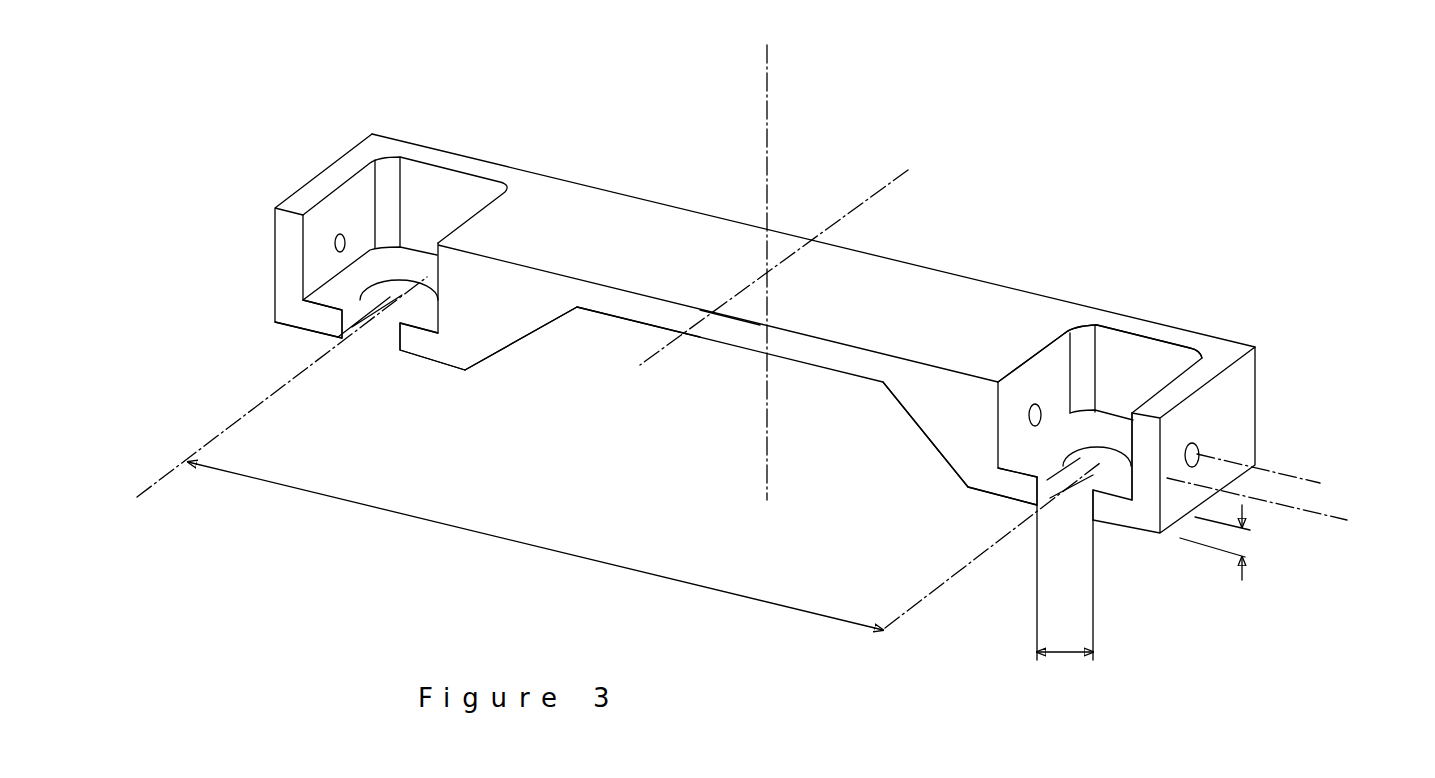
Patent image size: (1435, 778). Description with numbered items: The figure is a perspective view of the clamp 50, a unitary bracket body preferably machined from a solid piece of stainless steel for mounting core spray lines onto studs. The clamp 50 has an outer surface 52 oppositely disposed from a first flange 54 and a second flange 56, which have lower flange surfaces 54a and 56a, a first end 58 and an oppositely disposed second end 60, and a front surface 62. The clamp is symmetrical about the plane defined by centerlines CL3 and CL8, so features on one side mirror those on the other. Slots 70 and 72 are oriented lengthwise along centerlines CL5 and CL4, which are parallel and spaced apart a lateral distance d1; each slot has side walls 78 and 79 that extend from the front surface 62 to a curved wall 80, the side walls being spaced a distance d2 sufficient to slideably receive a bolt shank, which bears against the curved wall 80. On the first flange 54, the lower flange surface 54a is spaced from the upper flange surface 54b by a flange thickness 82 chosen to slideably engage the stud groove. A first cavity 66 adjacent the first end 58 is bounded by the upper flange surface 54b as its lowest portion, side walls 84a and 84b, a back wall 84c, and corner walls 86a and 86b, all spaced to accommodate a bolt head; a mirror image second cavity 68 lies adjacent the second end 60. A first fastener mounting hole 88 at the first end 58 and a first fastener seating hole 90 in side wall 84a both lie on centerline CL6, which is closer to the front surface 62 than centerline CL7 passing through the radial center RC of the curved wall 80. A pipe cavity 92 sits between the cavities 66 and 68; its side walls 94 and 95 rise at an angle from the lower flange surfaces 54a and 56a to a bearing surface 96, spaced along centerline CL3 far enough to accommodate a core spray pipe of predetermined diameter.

The clamp 50 is at (612, 173).
The outer surface 52 is at (875, 265).
The first flange 54 is at (1017, 487).
The lower flange surface 54a is at (1070, 473).
The upper flange surface 54b is at (1023, 462).
The second flange 56 is at (433, 353).
The lower flange surface 56a is at (290, 315).
The first end 58 is at (1250, 365).
The second end 60 is at (323, 170).
The front surface 62 is at (745, 335).
The first cavity 66 is at (1117, 360).
The second cavity 68 is at (443, 198).
The slot 70 is at (1023, 580).
The slot 72 is at (373, 355).
The side wall 78 is at (1070, 483).
The side wall 79 is at (1100, 468).
The curved wall 80 is at (332, 342).
The flange thickness 82 is at (1250, 543).
The side wall 84a is at (1042, 377).
The side wall 84b is at (1143, 397).
The back wall 84c is at (1148, 355).
The corner wall 86a is at (1087, 342).
The corner wall 86b is at (1202, 355).
The first fastener mounting hole 88 is at (1195, 453).
The first fastener seating hole 90 is at (1070, 413).
The pipe cavity 92 is at (600, 432).
The pipe cavity side wall 94 is at (922, 430).
The pipe cavity side wall 95 is at (500, 353).
The pipe cavity bearing surface 96 is at (628, 372).
The centerline CL3 is at (767, 75).
The centerline CL4 is at (148, 497).
The centerline CL5 is at (878, 628).
The centerline CL6 is at (1297, 478).
The centerline CL7 is at (1303, 510).
The centerline CL8 is at (885, 187).
The radial center RC is at (1100, 465).
The lateral distance d1 is at (535, 546).
The distance d2 is at (1065, 582).